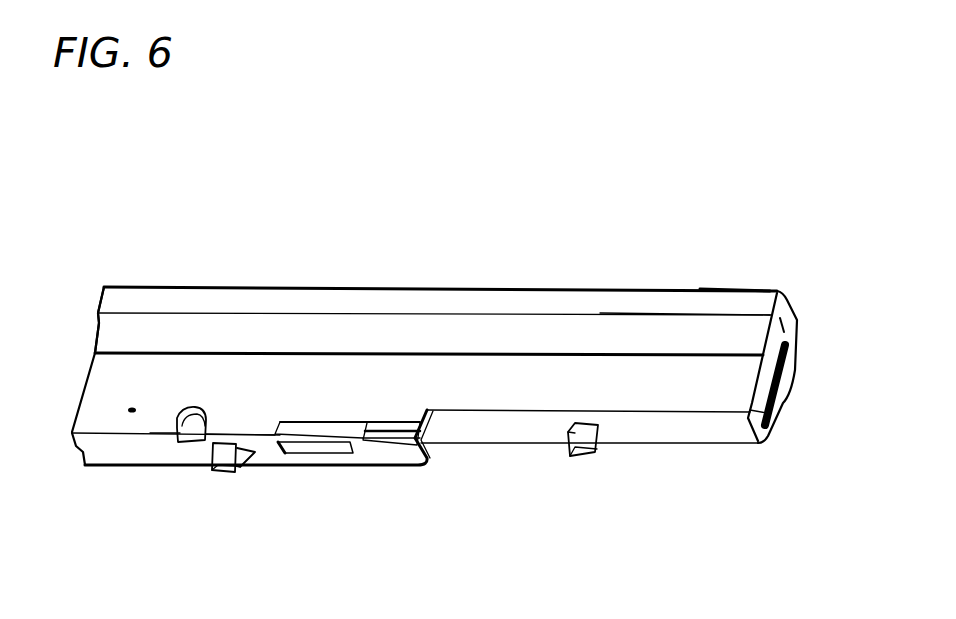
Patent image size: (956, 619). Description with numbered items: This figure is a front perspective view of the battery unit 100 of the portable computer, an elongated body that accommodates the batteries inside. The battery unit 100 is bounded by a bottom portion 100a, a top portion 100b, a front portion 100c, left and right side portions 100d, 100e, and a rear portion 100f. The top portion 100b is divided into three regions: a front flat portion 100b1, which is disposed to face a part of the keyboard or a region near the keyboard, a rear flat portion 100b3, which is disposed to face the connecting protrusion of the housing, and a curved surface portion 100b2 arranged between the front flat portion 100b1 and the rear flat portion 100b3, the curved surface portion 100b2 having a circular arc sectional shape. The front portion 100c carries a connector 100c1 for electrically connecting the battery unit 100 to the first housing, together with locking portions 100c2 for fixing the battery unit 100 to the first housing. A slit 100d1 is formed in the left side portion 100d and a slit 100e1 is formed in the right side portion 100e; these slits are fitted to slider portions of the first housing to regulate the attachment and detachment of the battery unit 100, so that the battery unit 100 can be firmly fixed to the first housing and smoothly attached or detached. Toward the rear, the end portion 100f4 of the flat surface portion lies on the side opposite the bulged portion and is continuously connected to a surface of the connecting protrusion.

The battery unit 100 is at (238, 203).
The bottom portion 100a is at (698, 443).
The top portion 100b is at (573, 347).
The front flat portion 100b1 is at (330, 392).
The curved surface portion 100b2 is at (475, 327).
The rear flat portion 100b3 is at (643, 303).
The front portion 100c is at (493, 432).
The connector 100c1 is at (323, 450).
The locking portions 100c2 is at (215, 477).
The left side portion 100d is at (97, 323).
The slit 100d1 is at (83, 470).
The right side portion 100e is at (778, 292).
The slit 100e1 is at (778, 418).
The rear portion 100f is at (395, 288).
The end portion 100f4 is at (715, 290).